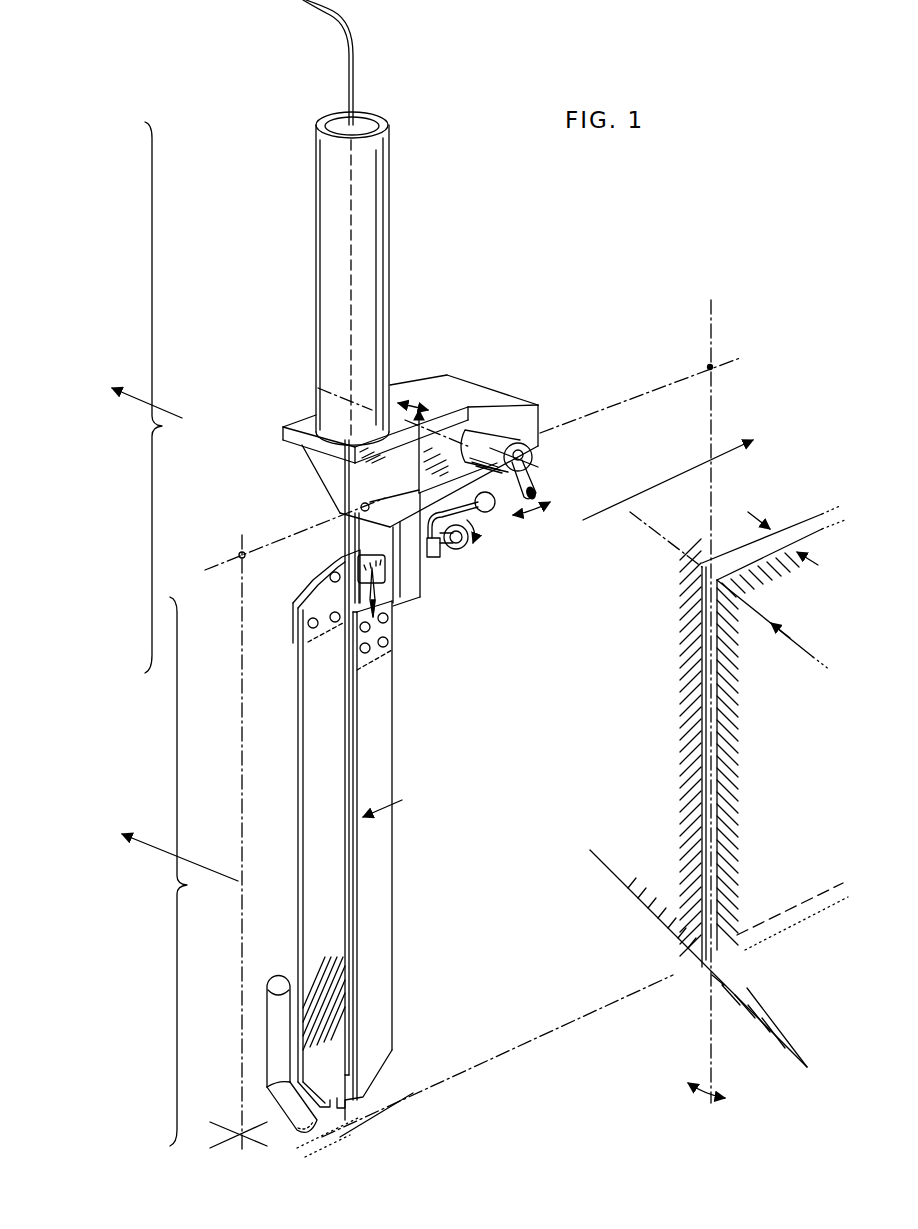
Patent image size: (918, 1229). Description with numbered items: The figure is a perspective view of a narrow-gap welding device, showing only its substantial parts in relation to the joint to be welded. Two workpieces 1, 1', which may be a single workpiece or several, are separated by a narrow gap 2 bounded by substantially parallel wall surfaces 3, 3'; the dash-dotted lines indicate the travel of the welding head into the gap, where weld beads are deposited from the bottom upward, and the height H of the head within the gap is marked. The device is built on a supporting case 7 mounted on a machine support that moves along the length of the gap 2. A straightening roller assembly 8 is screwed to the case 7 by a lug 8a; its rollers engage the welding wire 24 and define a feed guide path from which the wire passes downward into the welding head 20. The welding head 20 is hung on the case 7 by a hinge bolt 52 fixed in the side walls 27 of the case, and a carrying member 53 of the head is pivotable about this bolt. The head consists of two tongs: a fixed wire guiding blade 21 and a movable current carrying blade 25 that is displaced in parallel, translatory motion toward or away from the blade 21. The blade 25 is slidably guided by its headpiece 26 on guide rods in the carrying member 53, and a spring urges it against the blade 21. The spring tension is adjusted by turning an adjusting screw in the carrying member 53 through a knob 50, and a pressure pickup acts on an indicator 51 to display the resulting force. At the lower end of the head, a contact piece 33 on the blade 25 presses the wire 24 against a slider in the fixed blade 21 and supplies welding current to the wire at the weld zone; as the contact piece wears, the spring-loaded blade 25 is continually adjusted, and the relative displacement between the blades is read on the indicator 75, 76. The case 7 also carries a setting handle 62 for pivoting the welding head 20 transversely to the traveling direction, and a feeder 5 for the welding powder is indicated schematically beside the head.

The workpiece 1 is at (698, 905).
The workpiece 1' is at (759, 915).
The narrow gap 2 is at (786, 525).
The wall surface 3 is at (666, 747).
The wall surface 3' is at (758, 749).
The welding powder feeder 5 is at (276, 972).
The supporting case 7 is at (500, 403).
The straightening roller assembly 8 is at (378, 178).
The lug 8a is at (400, 386).
The welding head 20 is at (399, 737).
The wire guiding blade 21 is at (313, 816).
The welding wire 24 is at (355, 55).
The current carrying blade 25 is at (380, 873).
The headpiece 26 is at (403, 637).
The side walls 27 is at (318, 476).
The contact piece 33 is at (352, 1105).
The knob 50 is at (452, 552).
The indicator 51 is at (493, 512).
The hinge bolt 52 is at (361, 506).
The carrying member 53 is at (320, 597).
The setting handle 62 is at (540, 490).
The indicator 75 is at (380, 588).
The indicator 76 is at (378, 572).
The height H is at (713, 413).